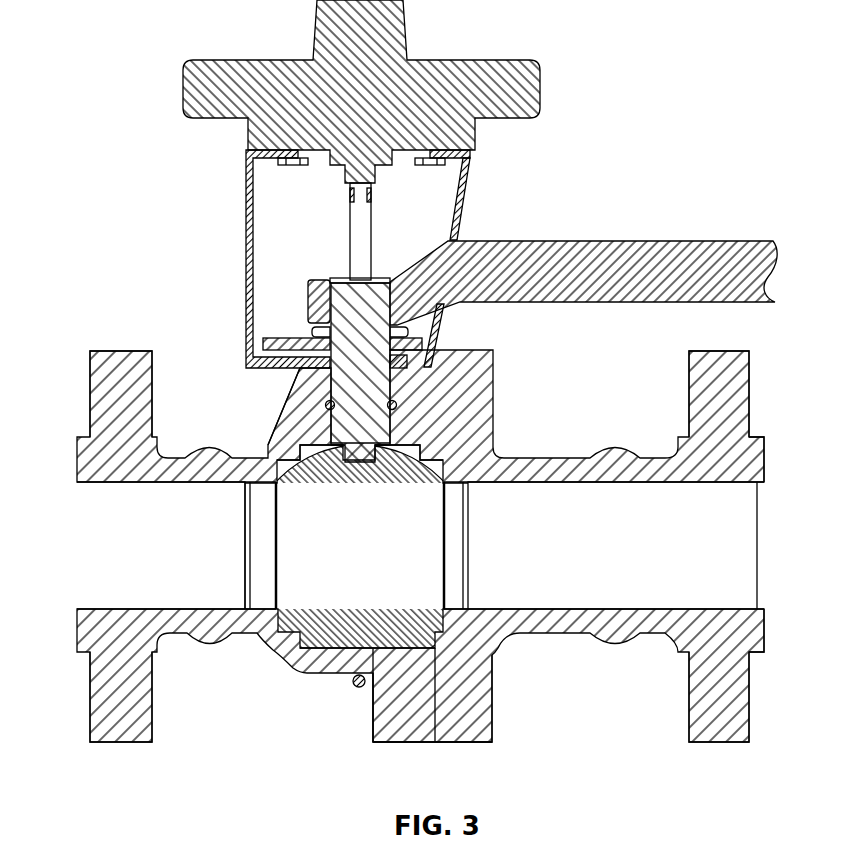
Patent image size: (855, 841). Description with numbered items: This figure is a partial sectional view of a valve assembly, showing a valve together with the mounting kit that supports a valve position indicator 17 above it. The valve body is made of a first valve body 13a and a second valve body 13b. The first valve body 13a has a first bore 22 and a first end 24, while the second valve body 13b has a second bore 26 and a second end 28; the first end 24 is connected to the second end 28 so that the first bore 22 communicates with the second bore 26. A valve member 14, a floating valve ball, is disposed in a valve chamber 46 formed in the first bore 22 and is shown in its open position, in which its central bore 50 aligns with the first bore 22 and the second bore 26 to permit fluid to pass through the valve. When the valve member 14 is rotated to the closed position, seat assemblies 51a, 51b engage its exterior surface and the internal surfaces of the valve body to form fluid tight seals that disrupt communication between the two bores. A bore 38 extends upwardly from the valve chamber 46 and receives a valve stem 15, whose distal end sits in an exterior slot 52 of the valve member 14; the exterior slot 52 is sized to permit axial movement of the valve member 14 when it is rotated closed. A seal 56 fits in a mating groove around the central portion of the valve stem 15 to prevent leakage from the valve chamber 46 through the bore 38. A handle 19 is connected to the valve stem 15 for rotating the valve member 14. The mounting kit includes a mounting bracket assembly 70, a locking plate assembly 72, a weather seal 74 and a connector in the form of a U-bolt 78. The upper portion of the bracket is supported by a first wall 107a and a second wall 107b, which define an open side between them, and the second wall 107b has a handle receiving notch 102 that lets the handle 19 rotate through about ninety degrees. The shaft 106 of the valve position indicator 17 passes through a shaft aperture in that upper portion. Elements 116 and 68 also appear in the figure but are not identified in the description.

The valve position indicator 17 is at (450, 58).
The handle 19 is at (632, 241).
The first wall 107a is at (245, 196).
The second wall 107b is at (472, 162).
The mounting bracket assembly 70 is at (470, 186).
The handle receiving notch 102 is at (450, 238).
The upper stem 116 is at (372, 232).
The shaft 106 is at (358, 204).
The valve stem 15 is at (382, 280).
The weather seal 74 is at (313, 332).
The locking plate assembly 72 is at (268, 343).
The packing ring 68 is at (330, 376).
The bore 38 is at (288, 438).
The first bore 22 is at (97, 486).
The second bore 26 is at (720, 590).
The first valve body 13a is at (120, 745).
The second valve body 13b is at (715, 745).
The valve member 14 is at (445, 620).
The valve chamber 46 is at (437, 488).
The exterior slot 52 is at (357, 478).
The central bore 50 is at (300, 604).
The seal 56 is at (397, 404).
The seat assembly 51a is at (305, 650).
The seat assembly 51b is at (413, 650).
The U-bolt 78 is at (360, 688).
The first end 24 is at (400, 745).
The second end 28 is at (490, 730).